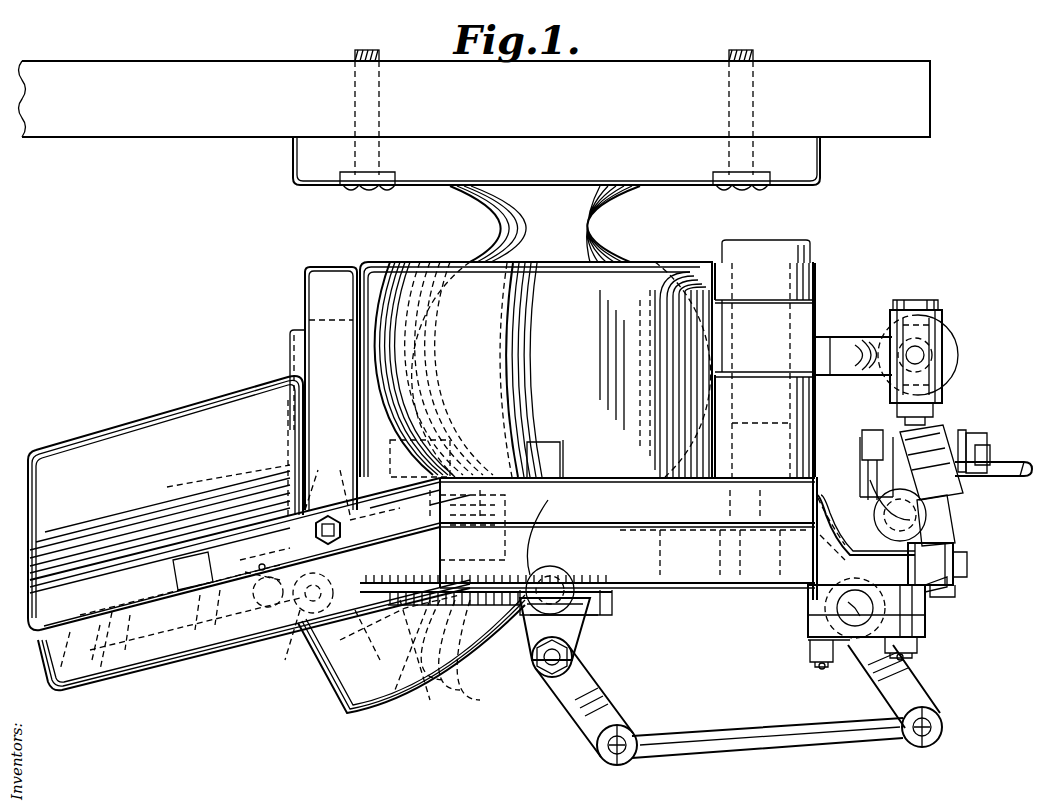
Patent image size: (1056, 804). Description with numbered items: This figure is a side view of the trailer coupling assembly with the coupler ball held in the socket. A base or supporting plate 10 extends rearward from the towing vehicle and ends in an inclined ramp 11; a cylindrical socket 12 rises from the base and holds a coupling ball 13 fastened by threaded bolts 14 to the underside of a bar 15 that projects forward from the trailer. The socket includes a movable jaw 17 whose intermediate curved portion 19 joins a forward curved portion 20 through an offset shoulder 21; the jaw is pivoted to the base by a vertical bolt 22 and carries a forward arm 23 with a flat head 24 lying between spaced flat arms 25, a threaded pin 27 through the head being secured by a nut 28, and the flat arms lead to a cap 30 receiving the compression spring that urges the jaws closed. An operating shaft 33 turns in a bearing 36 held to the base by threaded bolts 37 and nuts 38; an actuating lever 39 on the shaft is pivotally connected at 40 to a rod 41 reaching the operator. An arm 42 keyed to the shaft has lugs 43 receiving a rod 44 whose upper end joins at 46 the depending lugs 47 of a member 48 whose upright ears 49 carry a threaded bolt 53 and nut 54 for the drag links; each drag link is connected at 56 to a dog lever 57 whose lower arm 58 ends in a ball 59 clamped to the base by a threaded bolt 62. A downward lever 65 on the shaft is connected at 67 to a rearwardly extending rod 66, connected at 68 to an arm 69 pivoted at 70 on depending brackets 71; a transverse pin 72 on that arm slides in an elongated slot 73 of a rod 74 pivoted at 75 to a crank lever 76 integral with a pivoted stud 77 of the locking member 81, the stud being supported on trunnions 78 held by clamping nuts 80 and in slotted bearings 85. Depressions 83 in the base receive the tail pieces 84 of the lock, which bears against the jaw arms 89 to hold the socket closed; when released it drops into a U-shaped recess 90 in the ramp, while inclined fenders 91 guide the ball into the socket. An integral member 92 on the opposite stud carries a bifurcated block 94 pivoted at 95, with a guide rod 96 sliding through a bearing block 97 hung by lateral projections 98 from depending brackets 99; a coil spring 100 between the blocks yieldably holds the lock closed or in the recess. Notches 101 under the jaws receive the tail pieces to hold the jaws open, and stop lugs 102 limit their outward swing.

The base or supporting plate 10 is at (630, 495).
The inclined ramp 11 is at (146, 640).
The cylindrical socket 12 is at (672, 257).
The coupling ball 13 is at (490, 245).
The threaded bolts 14 is at (365, 188).
The bar or member 15 is at (210, 120).
The movable section or jaw 17 is at (395, 270).
The intermediate curved portion 19 is at (445, 270).
The forward curved portion 20 is at (680, 280).
The offset shoulder 21 is at (525, 312).
The vertical bolts 22 is at (806, 258).
The spaced arms or members 23 is at (830, 340).
The reduced flat terminal portions or heads 24 is at (940, 345).
The spaced flat arms 25 is at (935, 322).
The threaded bolts or pins 27 is at (918, 300).
The nuts 28 is at (930, 412).
The cap or socket member 30 is at (883, 340).
The operating shaft 33 is at (853, 626).
The bearing 36 is at (926, 614).
The threaded bolts 37 is at (821, 670).
The nuts 38 is at (812, 652).
The actuating lever 39 is at (715, 552).
The pivotal connection 40 is at (595, 505).
The rod 41 is at (990, 477).
The arm 42 is at (935, 595).
The spaced lugs 43 is at (952, 548).
The rod 44 is at (905, 530).
The pivotal connection 46 is at (880, 518).
The spaced depending lugs 47 is at (880, 490).
The member 48 is at (866, 480).
The spaced upwardly extending ears 49 is at (872, 432).
The threaded bolt 53 is at (988, 456).
The nut 54 is at (968, 440).
The pivotal and slidable connection 56 is at (990, 440).
The dog lever 57 is at (945, 425).
The lower arm 58 is at (948, 520).
The ball 59 is at (958, 580).
The threaded bolt 62 is at (968, 560).
The arm or lever 65 is at (910, 670).
The rearwardly extending rod 66 is at (812, 745).
The pivotal connection 67 is at (944, 727).
The pivotal connection 68 is at (605, 750).
The arm 69 is at (590, 682).
The pivot 70 is at (548, 672).
The spaced depending brackets 71 is at (580, 615).
The transverse pin 72 is at (486, 524).
The elongated slot 73 is at (440, 509).
The rod 74 is at (380, 573).
The pivotal connection 75 is at (255, 610).
The arm or crank lever 76 is at (204, 569).
The pivoted stud 77 is at (405, 504).
The trunnions or pintles 78 is at (326, 514).
The clamping nuts 80 is at (375, 521).
The locking member 81 is at (320, 290).
The spaced depressions 83 is at (425, 690).
The tail pieces 84 is at (340, 700).
The slotted bearings 85 is at (346, 485).
The outwardly extending portions or arms 89 is at (292, 346).
The U-shaped recess 90 is at (108, 675).
The inclined fenders 91 is at (78, 435).
The integral member 92 is at (263, 557).
The bifurcated block 94 is at (340, 625).
The pivotal connection or fulcrum point 95 is at (300, 615).
The guide rod 96 is at (612, 602).
The bearing block 97 is at (590, 618).
The lateral projections 98 is at (556, 575).
The spaced depending brackets 99 is at (545, 540).
The coil spring 100 is at (458, 650).
The recess or notch 101 is at (452, 445).
The spaced stop lugs 102 is at (562, 445).